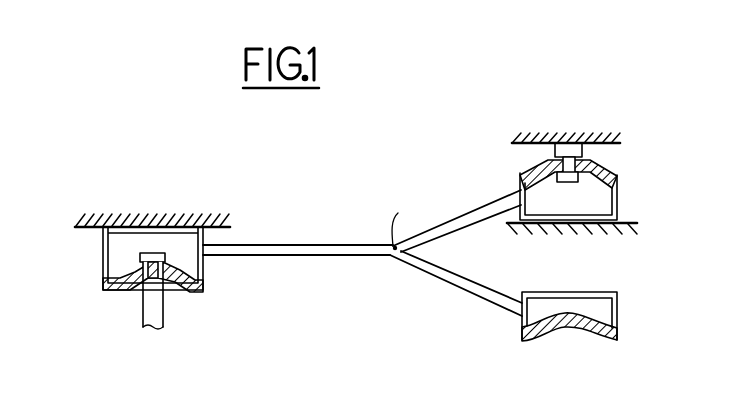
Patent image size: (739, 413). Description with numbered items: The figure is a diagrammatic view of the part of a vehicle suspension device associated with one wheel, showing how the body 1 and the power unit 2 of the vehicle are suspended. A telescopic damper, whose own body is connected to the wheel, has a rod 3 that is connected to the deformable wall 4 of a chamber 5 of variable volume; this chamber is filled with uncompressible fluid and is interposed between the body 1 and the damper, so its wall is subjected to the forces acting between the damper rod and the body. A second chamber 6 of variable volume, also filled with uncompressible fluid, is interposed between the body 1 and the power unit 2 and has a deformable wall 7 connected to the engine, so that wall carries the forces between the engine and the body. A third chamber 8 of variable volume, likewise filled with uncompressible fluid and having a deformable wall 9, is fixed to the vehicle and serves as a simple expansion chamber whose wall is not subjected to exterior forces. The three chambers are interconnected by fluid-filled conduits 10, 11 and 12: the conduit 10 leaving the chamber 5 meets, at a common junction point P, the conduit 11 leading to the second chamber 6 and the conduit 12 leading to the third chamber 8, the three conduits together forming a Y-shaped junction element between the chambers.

The body 1 is at (183, 220).
The power unit 2 is at (538, 142).
The rod 3 is at (157, 315).
The deformable wall 4 is at (187, 288).
The chamber 5 is at (123, 242).
The second chamber 6 is at (600, 205).
The deformable wall 7 is at (533, 172).
The third chamber 8 is at (582, 305).
The deformable wall 9 is at (590, 335).
The conduit 10 is at (293, 245).
The conduit 11 is at (447, 232).
The conduit 12 is at (473, 287).